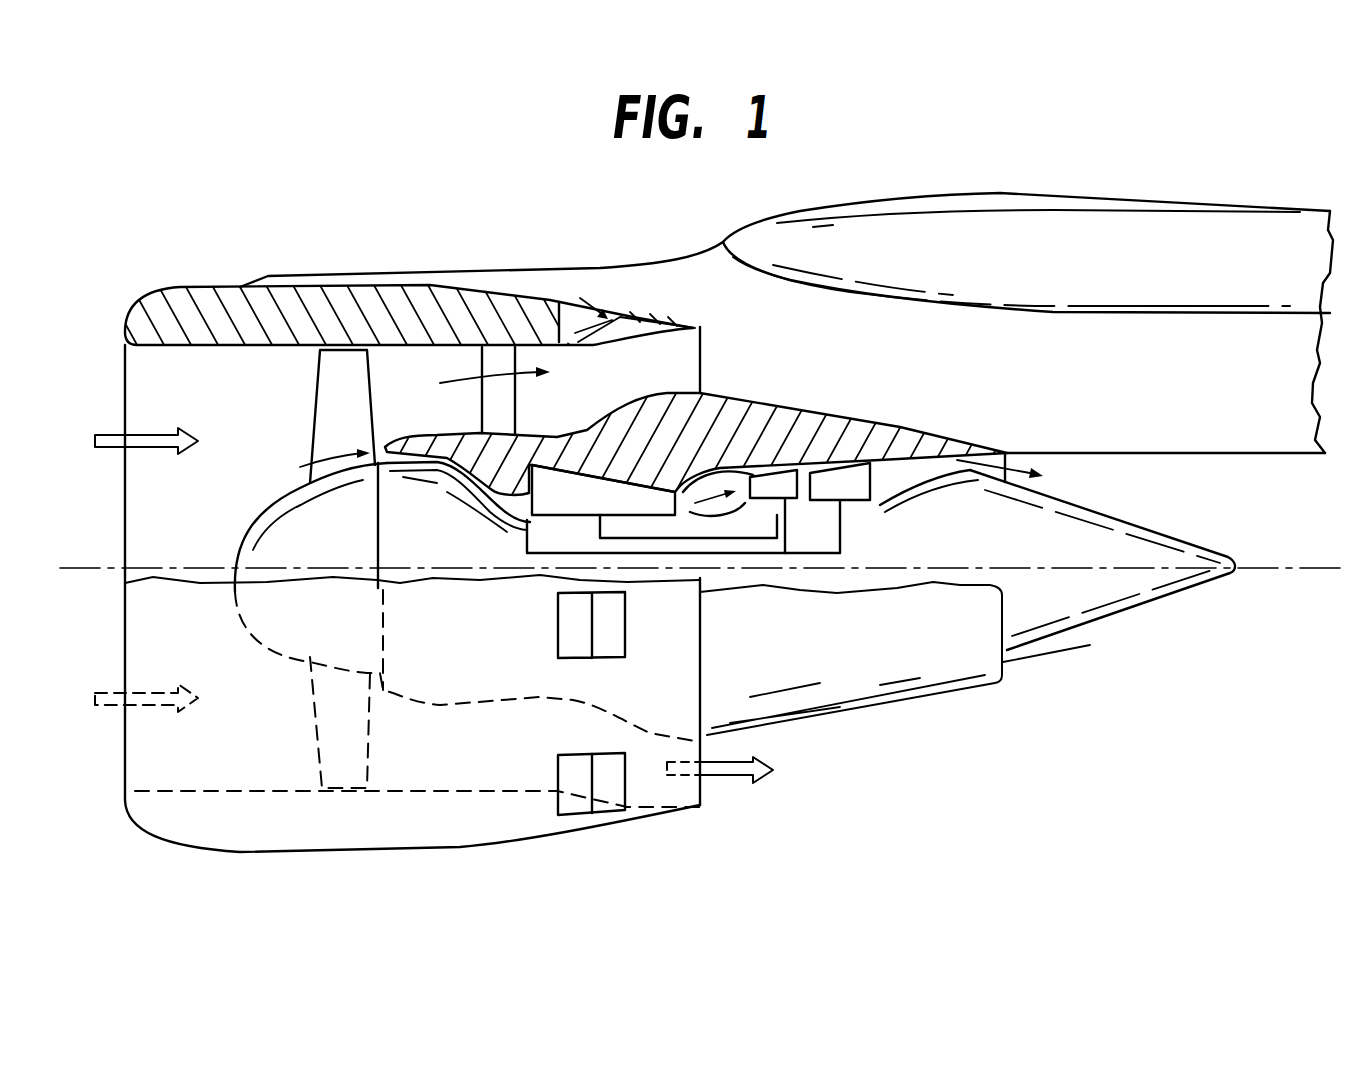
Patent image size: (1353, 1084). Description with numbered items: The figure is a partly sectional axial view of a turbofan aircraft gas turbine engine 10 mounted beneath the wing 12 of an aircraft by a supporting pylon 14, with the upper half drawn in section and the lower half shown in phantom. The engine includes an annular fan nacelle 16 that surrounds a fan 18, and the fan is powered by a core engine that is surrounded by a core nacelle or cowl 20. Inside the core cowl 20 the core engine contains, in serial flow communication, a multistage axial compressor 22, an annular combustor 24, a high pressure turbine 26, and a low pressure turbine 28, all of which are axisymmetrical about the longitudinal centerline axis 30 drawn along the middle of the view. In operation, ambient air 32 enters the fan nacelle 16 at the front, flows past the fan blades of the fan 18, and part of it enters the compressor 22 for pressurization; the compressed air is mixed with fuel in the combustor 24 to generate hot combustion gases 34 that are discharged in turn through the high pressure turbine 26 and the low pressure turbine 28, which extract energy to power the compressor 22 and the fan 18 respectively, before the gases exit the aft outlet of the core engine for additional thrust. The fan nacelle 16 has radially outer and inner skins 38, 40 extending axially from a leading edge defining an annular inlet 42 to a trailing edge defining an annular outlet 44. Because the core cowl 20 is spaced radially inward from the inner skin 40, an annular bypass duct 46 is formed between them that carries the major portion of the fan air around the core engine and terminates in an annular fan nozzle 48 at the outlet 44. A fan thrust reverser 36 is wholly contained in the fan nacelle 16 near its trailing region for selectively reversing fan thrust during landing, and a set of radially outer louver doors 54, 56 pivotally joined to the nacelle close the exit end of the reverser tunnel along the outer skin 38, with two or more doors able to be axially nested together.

The turbofan aircraft gas turbine engine 10 is at (217, 262).
The wing 12 is at (945, 197).
The supporting pylon 14 is at (1168, 396).
The fan nacelle 16 is at (213, 850).
The fan 18 is at (318, 404).
The core cowl 20 is at (912, 428).
The multistage axial compressor 22 is at (553, 500).
The annular combustor 24 is at (726, 515).
The high pressure turbine 26 is at (790, 500).
The low pressure turbine 28 is at (857, 500).
The longitudinal or axial centerline axis 30 is at (1258, 560).
The ambient air 32 is at (107, 447).
The combustion gases 34 is at (1033, 663).
The fan thrust reverser 36 is at (598, 280).
The outer skin 38 is at (378, 287).
The inner skin 40 is at (432, 347).
The annular inlet 42 is at (125, 382).
The annular outlet 44 is at (705, 358).
The annular bypass duct 46 is at (456, 423).
The annular fan nozzle 48 is at (682, 375).
The louver door 54 is at (573, 805).
The louver door 56 is at (600, 805).